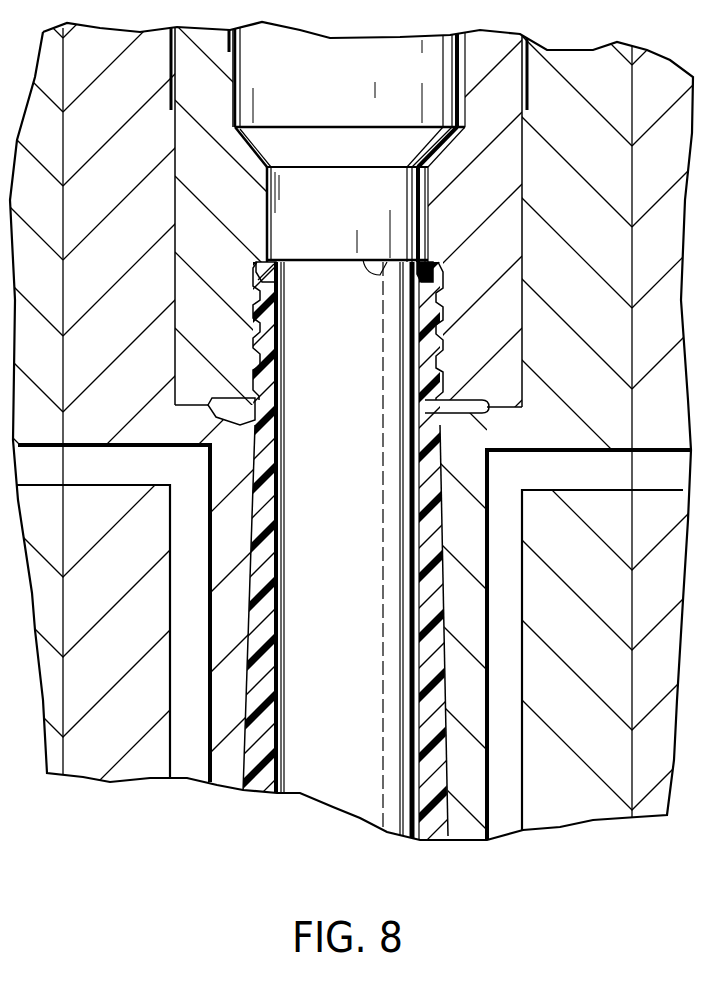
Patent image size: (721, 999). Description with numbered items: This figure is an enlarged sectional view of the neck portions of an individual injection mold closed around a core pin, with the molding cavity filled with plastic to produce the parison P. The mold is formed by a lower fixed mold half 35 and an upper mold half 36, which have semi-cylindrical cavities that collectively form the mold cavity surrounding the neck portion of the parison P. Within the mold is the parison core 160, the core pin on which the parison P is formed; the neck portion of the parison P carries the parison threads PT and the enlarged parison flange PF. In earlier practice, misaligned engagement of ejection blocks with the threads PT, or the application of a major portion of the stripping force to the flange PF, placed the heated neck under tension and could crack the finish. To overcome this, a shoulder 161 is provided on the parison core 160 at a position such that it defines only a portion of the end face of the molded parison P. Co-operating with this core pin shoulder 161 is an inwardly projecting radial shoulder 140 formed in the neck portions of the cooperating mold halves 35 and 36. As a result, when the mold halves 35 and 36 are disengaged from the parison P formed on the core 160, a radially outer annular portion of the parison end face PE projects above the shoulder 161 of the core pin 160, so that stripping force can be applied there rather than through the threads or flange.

The lower fixed mold half 35 is at (503, 152).
The upper mold half 36 is at (195, 225).
The inwardly projecting radial shoulder 140 is at (275, 276).
The parison core 160 is at (365, 358).
The shoulder 161 is at (433, 258).
The parison P is at (443, 642).
The parison end face PE is at (266, 257).
The parison threads PT is at (445, 305).
The enlarged parison flange PF is at (476, 415).